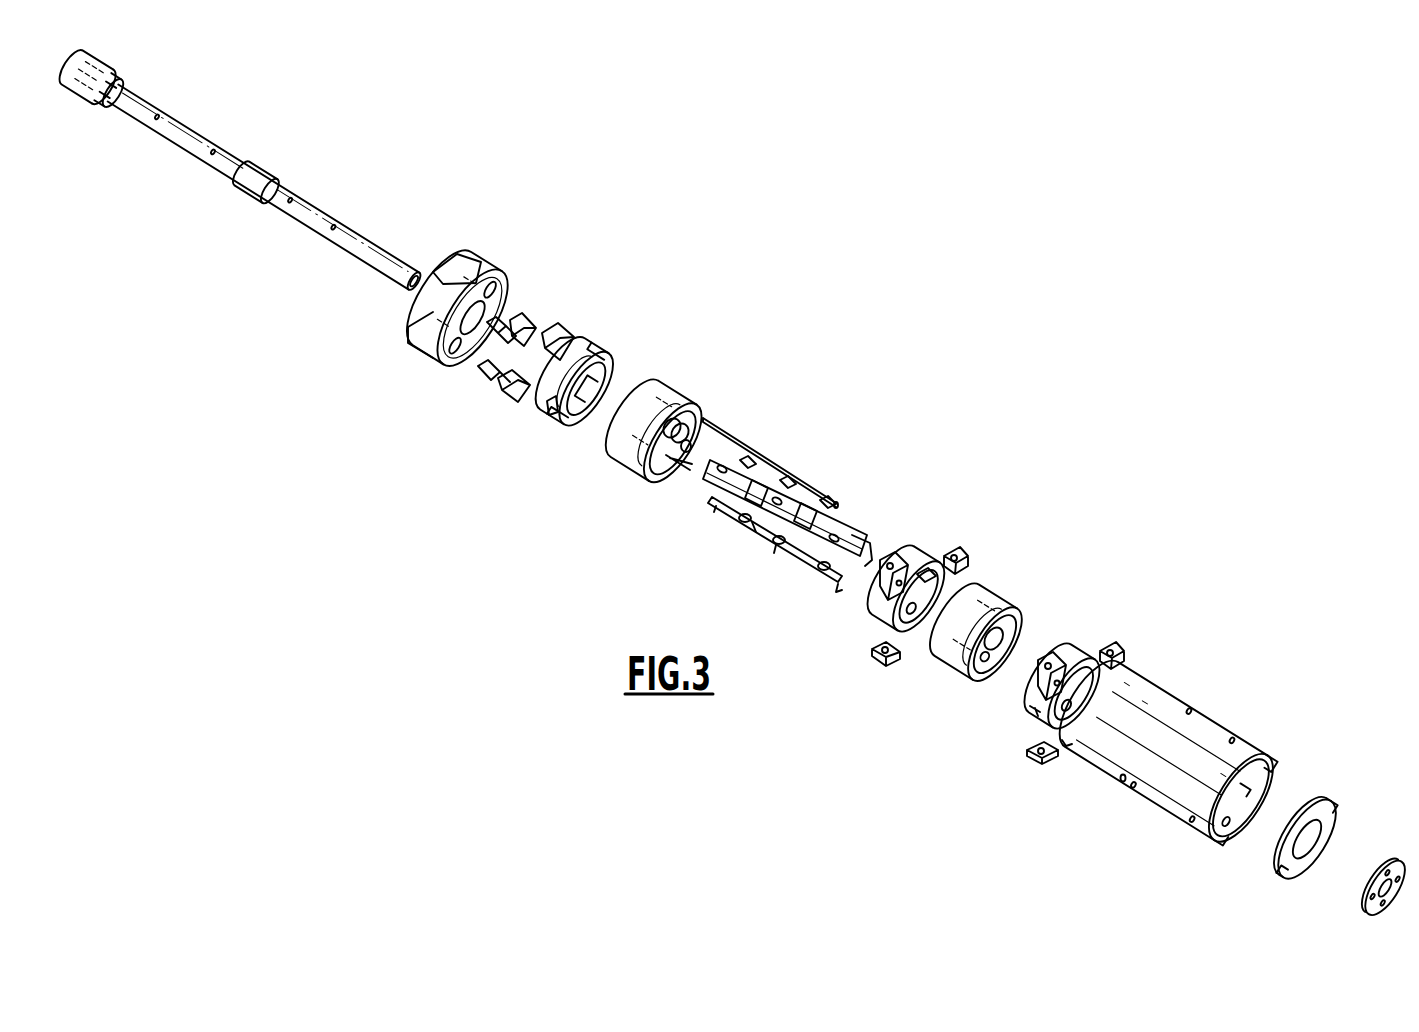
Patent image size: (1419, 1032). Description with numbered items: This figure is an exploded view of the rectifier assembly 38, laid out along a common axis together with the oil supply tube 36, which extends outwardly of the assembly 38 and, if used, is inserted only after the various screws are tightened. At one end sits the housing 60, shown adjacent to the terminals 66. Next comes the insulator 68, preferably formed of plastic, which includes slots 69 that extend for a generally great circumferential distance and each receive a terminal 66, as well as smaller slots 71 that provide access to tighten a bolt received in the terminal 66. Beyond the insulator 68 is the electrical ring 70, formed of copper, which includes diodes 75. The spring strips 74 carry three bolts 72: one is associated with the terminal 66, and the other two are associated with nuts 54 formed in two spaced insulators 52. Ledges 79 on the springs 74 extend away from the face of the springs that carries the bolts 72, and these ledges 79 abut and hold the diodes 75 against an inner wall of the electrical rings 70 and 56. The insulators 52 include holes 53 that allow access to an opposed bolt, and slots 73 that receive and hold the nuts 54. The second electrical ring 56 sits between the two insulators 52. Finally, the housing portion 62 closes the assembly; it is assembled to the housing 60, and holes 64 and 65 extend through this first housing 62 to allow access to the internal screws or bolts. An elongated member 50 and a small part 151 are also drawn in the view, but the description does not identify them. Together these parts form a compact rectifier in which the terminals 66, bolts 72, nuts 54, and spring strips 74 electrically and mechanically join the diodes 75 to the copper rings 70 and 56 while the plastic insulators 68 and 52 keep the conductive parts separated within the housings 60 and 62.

The oil supply tube 36 is at (226, 163).
The rectifier assembly 38 is at (845, 326).
The rod 50 is at (733, 430).
The insulator 52 is at (915, 550).
The hole 53 is at (877, 618).
The nut 54 is at (957, 552).
The electrical ring 56 is at (950, 657).
The housing portion 60 is at (478, 262).
The housing portion 62 is at (1158, 688).
The hole 64 is at (1123, 782).
The hole 65 is at (1063, 745).
The terminal 66 is at (510, 388).
The insulator 68 is at (622, 357).
The slot 69 is at (570, 357).
The electrical ring 70 is at (627, 463).
The slot 71 is at (552, 410).
The bolt 72 is at (710, 502).
The slot 73 is at (918, 582).
The spring strip 74 is at (657, 560).
The diode 75 is at (686, 440).
The ledge 79 is at (740, 520).
The screw 151 is at (1033, 708).